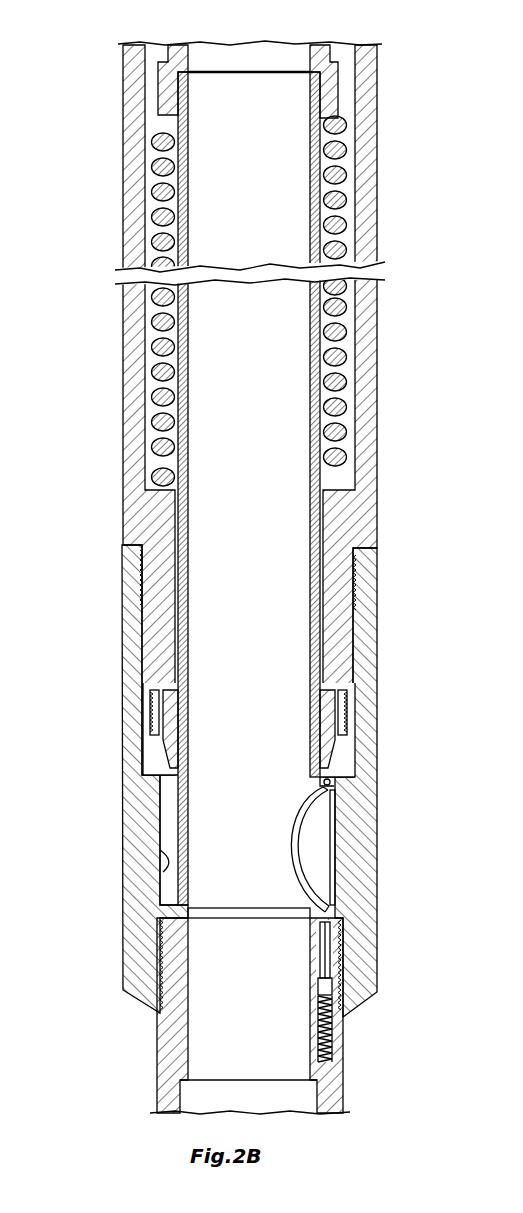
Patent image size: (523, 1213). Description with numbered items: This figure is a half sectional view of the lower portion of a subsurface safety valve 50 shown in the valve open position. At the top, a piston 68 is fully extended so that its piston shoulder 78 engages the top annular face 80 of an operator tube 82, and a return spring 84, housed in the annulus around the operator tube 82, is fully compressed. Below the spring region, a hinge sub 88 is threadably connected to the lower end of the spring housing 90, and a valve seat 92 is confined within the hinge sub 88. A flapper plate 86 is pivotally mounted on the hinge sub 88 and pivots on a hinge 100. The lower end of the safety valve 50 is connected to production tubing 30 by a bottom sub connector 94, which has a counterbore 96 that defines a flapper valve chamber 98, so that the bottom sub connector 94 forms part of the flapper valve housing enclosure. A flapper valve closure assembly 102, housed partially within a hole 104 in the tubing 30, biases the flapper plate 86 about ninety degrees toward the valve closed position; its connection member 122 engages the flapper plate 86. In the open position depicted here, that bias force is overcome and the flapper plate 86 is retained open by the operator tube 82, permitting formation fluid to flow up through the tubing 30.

The production tubing 30 is at (345, 1055).
The safety valve 50 is at (402, 171).
The piston 68 is at (355, 48).
The piston shoulder 78 is at (182, 80).
The top annular face 80 is at (263, 72).
The operator tube 82 is at (188, 846).
The return spring 84 is at (350, 345).
The flapper plate 86 is at (318, 830).
The hinge sub 88 is at (150, 768).
The spring housing 90 is at (125, 92).
The valve seat 92 is at (180, 732).
The bottom sub connector 94 is at (362, 968).
The counterbore 96 is at (160, 855).
The flapper valve chamber 98 is at (168, 808).
The hinge 100 is at (337, 797).
The flapper valve closure assembly 102 is at (316, 988).
The hole 104 is at (343, 1035).
The connection member 122 is at (337, 892).